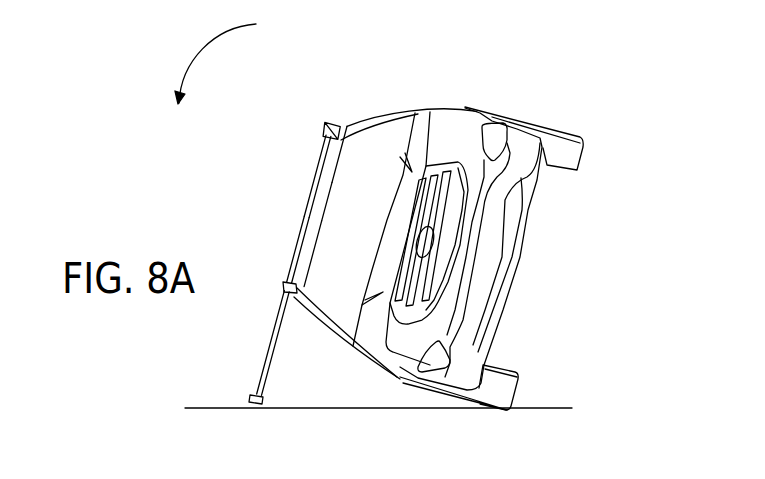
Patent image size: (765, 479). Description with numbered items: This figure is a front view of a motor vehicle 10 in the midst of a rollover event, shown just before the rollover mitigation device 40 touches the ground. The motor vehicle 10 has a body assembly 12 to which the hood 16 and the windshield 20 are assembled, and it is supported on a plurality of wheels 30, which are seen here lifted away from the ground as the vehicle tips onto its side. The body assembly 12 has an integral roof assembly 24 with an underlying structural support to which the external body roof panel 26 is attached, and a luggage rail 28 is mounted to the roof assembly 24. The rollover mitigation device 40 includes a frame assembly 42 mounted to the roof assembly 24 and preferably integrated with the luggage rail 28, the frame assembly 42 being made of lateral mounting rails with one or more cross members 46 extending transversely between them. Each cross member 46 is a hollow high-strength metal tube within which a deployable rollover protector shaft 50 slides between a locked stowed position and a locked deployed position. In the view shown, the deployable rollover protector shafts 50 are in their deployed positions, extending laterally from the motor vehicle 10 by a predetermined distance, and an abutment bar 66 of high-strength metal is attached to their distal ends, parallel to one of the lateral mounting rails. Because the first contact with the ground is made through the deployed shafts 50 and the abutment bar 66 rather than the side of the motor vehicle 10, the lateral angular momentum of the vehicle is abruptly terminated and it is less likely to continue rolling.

The motor vehicle 10 is at (227, 158).
The body assembly 12 is at (472, 118).
The hood 16 is at (418, 126).
The windshield 20 is at (318, 303).
The roof assembly 24 is at (328, 172).
The external body roof panel 26 is at (318, 237).
The luggage rail 28 is at (307, 193).
The wheels 30 is at (572, 152).
The rollover mitigation device 40 is at (327, 127).
The frame assembly 42 is at (297, 245).
The cross member 46 is at (325, 207).
The deployable rollover protector shaft 50 is at (267, 358).
The abutment bar 66 is at (258, 403).